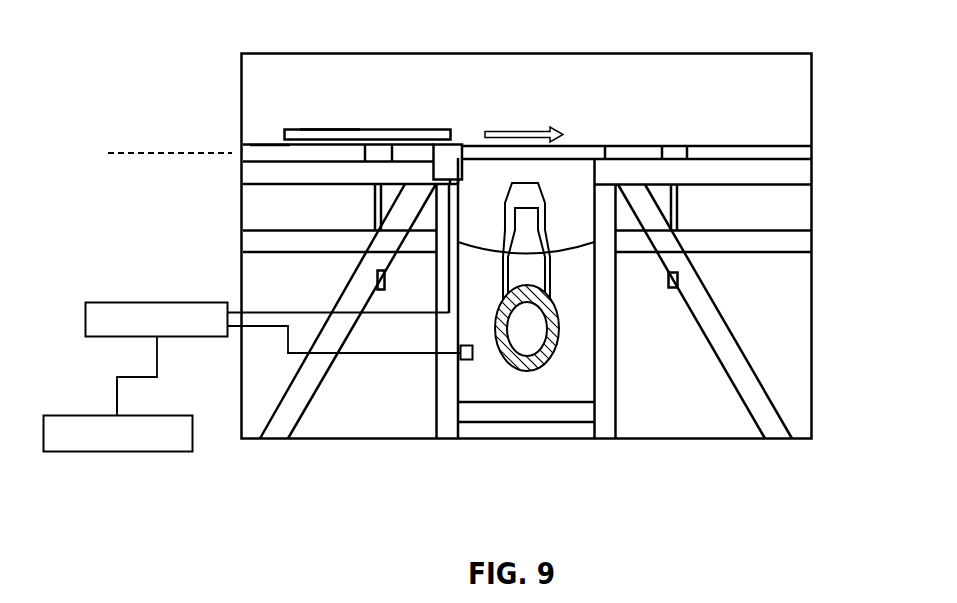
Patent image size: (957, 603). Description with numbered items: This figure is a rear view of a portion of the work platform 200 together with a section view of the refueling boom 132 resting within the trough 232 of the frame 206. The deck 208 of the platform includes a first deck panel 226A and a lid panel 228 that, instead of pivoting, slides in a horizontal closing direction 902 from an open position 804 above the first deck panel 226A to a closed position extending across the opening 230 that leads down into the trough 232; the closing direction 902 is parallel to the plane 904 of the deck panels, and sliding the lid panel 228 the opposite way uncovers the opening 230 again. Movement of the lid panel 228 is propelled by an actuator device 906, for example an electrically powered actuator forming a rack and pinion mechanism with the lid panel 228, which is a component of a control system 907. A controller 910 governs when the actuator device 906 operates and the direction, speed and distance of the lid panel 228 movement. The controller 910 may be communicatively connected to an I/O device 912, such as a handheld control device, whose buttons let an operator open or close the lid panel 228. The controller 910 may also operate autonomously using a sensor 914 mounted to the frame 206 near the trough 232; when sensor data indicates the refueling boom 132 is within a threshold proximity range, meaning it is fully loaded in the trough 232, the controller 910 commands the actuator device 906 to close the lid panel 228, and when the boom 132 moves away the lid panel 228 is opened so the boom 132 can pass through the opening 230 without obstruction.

The work platform 200 is at (822, 151).
The frame 206 is at (440, 415).
The deck 208 is at (233, 153).
The first deck panel 226A is at (268, 150).
The lid panel 228 is at (400, 127).
The open position 804 is at (327, 115).
The actuator device 906 is at (456, 152).
The closing direction 902 is at (527, 131).
The plane 904 is at (153, 151).
The opening 230 is at (590, 161).
The trough 232 is at (568, 400).
The refueling boom 132 is at (557, 330).
The sensor 914 is at (466, 360).
The controller 910 is at (157, 302).
The control system 907 is at (82, 366).
The I/O device 912 is at (117, 452).